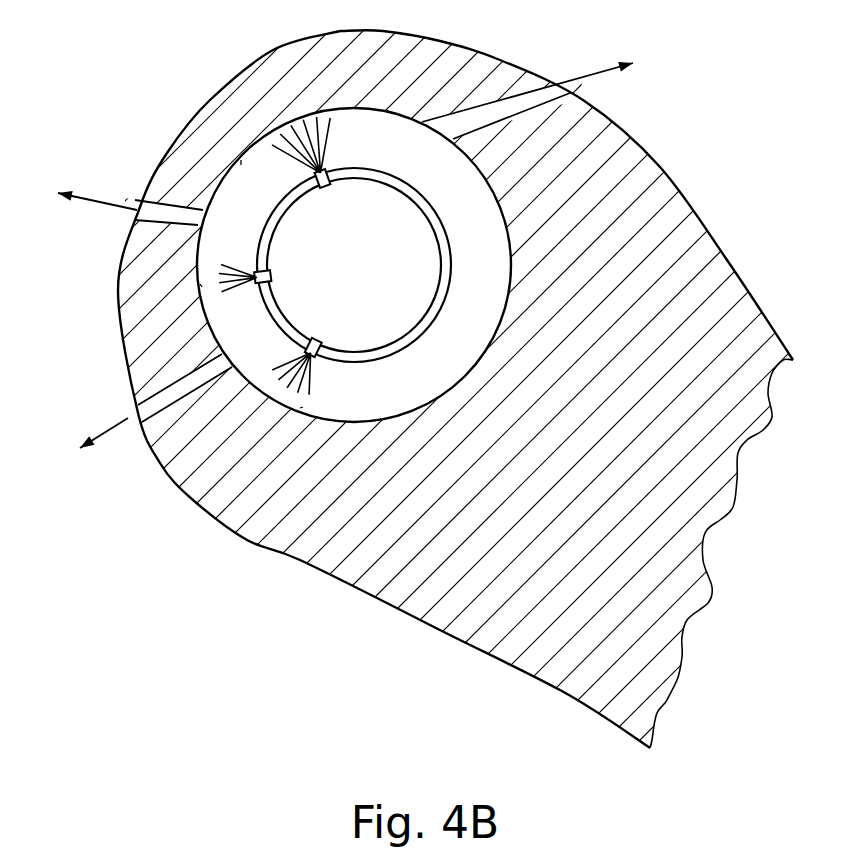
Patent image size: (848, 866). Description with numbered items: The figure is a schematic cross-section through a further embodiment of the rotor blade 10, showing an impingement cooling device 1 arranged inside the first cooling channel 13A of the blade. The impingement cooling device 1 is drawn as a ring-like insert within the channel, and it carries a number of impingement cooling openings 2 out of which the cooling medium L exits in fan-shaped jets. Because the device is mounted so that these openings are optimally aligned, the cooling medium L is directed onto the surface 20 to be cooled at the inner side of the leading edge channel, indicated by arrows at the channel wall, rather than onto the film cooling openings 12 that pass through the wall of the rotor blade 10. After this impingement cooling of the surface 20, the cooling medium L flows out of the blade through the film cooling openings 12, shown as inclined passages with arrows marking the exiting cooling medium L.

The rotor blade 10 is at (750, 152).
The first cooling channel 13A is at (410, 367).
The impingement cooling device 1 is at (422, 207).
The impingement cooling openings 2 is at (328, 186).
The film cooling openings 12 is at (553, 92).
The surface to be cooled 20 is at (241, 160).
The cooling medium L is at (320, 370).